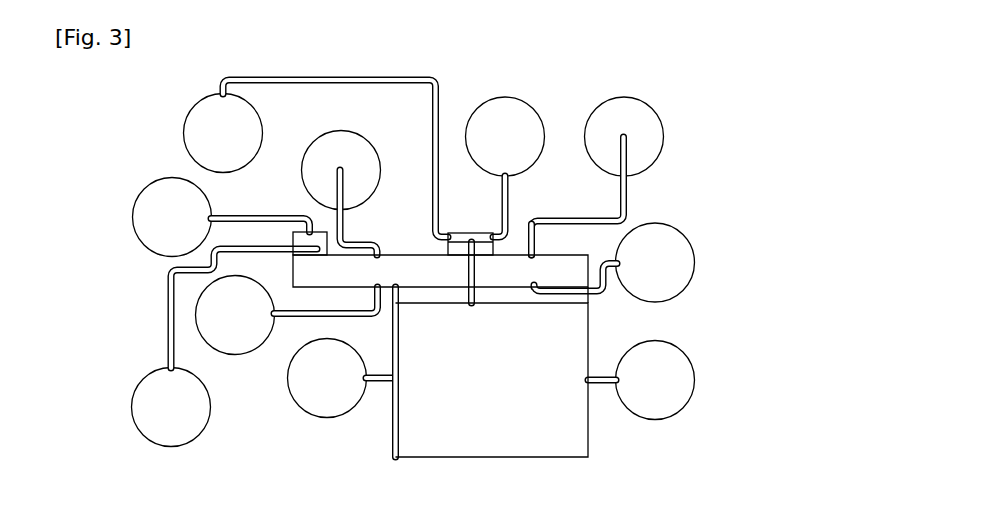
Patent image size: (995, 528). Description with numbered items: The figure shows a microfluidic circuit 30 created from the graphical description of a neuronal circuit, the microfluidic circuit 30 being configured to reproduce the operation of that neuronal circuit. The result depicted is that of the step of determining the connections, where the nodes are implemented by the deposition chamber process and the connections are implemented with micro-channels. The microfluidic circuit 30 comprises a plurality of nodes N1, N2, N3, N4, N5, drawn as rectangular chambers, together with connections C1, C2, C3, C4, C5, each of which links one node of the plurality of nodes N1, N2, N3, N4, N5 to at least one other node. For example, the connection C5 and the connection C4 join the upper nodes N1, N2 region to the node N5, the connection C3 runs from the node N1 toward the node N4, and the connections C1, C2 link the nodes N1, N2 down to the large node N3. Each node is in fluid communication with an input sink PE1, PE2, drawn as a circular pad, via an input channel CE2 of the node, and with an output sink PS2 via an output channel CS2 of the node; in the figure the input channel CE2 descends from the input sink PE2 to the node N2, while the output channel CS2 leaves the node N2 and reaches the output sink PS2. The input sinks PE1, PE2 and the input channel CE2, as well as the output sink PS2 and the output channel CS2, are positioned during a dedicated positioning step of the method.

The microfluidic circuit 30 is at (810, 148).
The input sink PE1 is at (343, 131).
The input sink PE2 is at (663, 136).
The output sink PS2 is at (693, 266).
The input channel CE2 is at (632, 196).
The output channel CS2 is at (597, 297).
The node N1 is at (366, 271).
The node N2 is at (514, 271).
The node N3 is at (492, 380).
The node N4 is at (293, 243).
The node N5 is at (471, 234).
The connection C1 is at (408, 300).
The connection C2 is at (506, 300).
The connection C3 is at (318, 248).
The connection C4 is at (510, 248).
The connection C5 is at (448, 253).